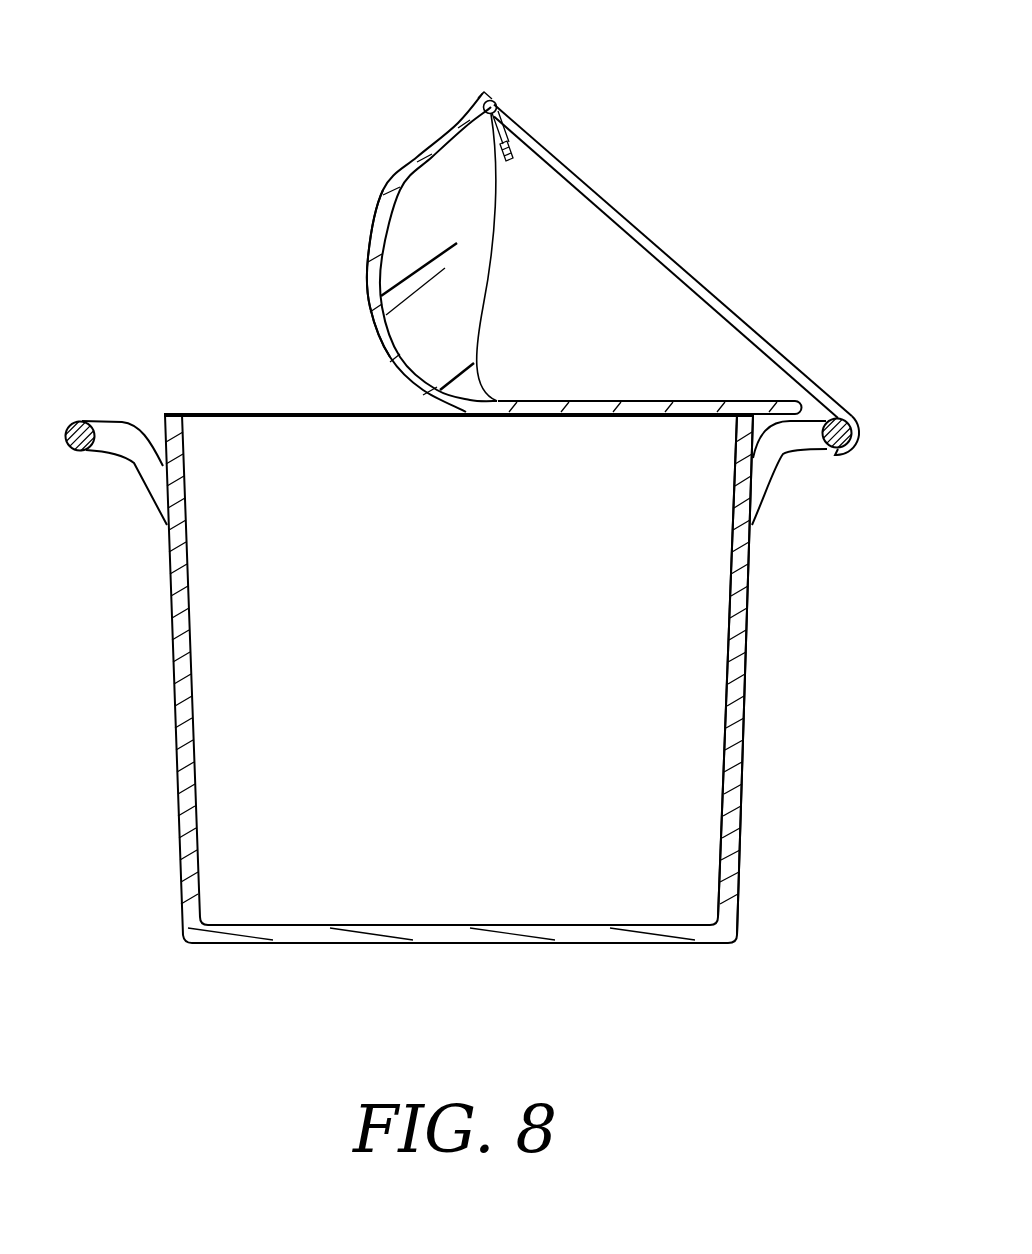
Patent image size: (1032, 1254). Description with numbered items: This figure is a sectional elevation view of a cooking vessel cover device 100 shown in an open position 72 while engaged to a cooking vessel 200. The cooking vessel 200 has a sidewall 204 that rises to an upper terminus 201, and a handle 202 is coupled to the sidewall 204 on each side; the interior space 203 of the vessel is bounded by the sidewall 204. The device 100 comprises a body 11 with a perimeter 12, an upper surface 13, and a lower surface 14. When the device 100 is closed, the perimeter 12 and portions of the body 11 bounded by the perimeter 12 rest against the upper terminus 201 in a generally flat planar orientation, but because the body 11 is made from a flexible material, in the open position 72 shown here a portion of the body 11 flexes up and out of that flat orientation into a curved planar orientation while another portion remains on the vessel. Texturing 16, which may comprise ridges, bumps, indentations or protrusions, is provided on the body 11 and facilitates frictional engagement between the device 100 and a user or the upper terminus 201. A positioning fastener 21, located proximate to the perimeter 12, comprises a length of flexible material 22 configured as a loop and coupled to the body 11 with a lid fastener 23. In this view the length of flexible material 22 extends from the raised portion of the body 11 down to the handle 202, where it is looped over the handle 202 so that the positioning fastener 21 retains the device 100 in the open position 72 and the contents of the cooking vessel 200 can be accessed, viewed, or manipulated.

The cooking vessel cover device 100 is at (390, 74).
The body 11 is at (568, 400).
The perimeter 12 is at (485, 94).
The upper surface 13 is at (470, 208).
The lower surface 14 is at (370, 344).
The texturing 16 is at (445, 268).
The positioning fastener 21 is at (524, 104).
The length of flexible material 22 is at (512, 162).
The lid fastener 23 is at (497, 103).
The open position 72 is at (356, 210).
The cooking vessel 200 is at (290, 972).
The upper terminus 201 is at (284, 412).
The handle 202 is at (134, 452).
The interior 203 is at (428, 634).
The sidewall 204 is at (745, 752).